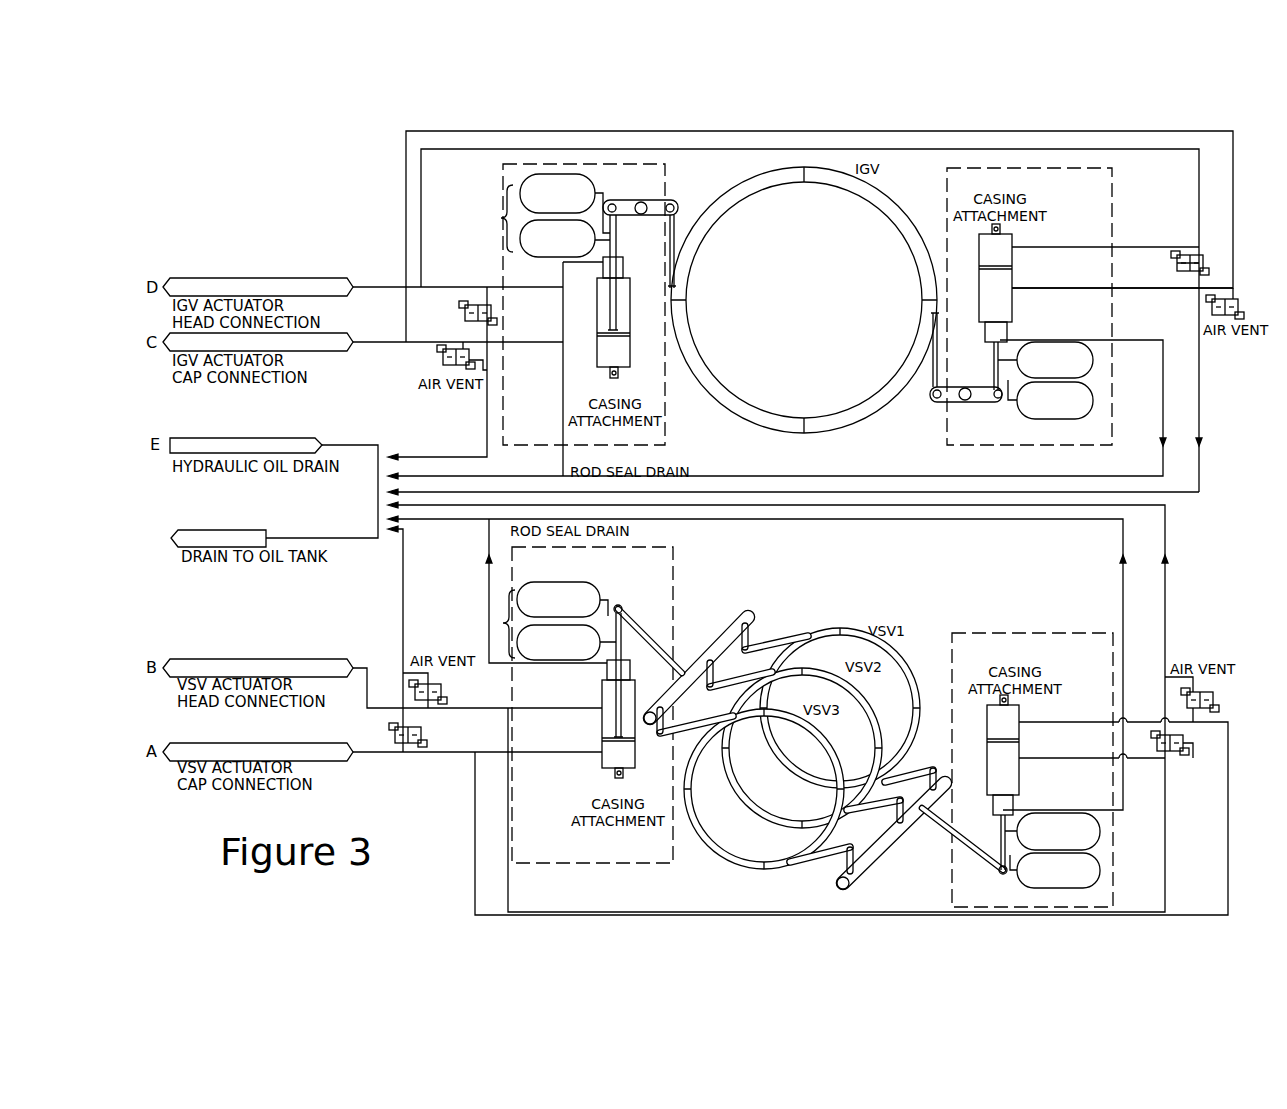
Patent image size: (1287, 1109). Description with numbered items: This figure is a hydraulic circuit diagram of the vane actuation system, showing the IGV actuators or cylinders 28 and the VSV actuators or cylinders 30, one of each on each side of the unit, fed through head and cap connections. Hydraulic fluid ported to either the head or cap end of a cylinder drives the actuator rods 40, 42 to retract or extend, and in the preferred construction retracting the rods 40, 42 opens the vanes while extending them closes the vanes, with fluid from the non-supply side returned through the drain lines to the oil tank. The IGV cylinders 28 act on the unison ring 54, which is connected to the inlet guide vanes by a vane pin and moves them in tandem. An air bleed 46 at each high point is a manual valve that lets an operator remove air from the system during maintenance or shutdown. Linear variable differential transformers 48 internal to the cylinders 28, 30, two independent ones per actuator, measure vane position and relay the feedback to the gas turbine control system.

The IGV actuator 28 is at (606, 352).
The VSV actuator 30 is at (612, 757).
The actuator rod 40 is at (610, 329).
The actuator rod 42 is at (614, 728).
The air bleed 46 is at (475, 357).
The linear variable differential transformer 48 is at (501, 218).
The unison ring 54 is at (853, 418).